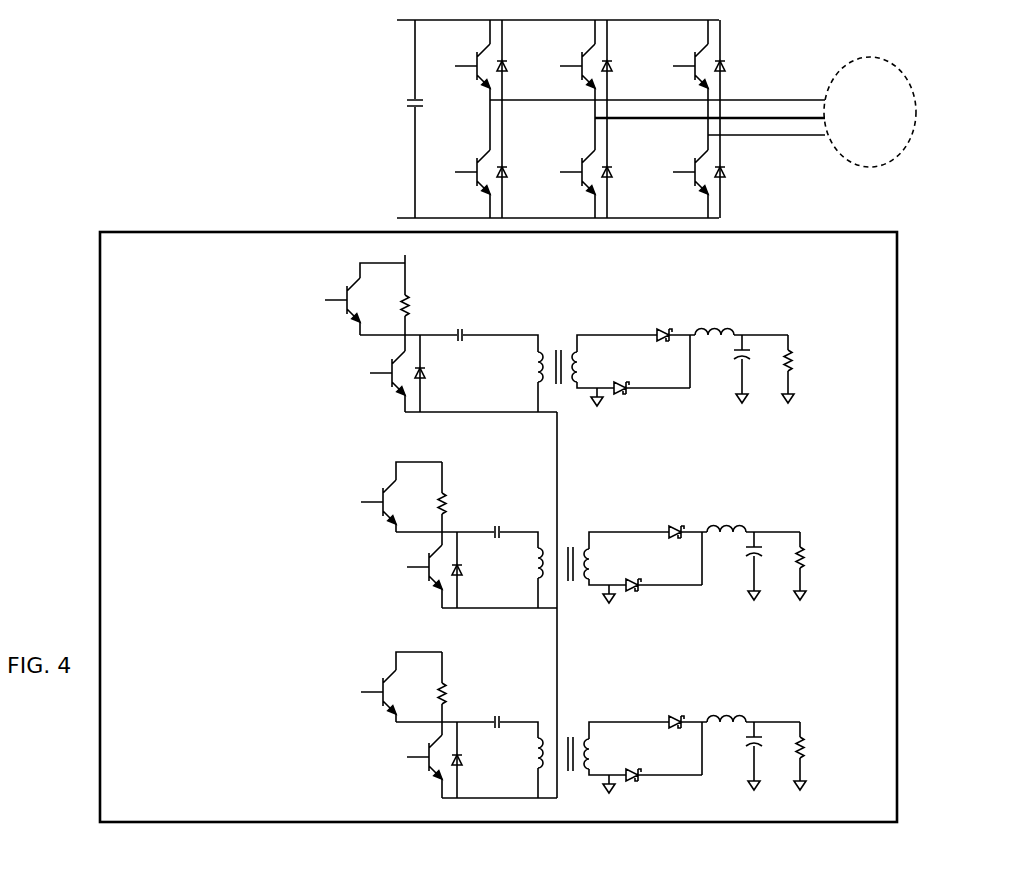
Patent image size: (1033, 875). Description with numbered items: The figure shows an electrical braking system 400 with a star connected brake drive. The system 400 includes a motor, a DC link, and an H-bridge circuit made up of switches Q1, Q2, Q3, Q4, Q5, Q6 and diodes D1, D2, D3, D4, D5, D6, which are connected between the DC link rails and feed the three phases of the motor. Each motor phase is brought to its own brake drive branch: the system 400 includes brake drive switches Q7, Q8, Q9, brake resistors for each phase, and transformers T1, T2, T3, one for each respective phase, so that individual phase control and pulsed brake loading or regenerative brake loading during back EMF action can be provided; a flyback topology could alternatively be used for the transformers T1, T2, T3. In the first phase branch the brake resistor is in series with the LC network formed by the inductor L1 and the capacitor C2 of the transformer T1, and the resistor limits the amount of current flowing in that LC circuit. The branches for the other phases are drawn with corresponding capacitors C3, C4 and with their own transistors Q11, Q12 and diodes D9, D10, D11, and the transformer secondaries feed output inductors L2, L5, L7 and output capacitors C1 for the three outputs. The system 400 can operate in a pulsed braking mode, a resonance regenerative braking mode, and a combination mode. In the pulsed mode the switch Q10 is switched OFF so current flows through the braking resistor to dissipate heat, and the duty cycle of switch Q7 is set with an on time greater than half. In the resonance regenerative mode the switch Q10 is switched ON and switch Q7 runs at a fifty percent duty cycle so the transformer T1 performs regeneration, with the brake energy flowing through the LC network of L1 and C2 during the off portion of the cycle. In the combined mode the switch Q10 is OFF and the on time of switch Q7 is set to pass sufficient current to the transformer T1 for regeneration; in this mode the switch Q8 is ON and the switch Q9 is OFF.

The electrical braking system 400 is at (79, 78).
The switch Q1 is at (471, 61).
The switch Q2 is at (471, 167).
The switch Q3 is at (576, 61).
The switch Q4 is at (576, 167).
The switch Q5 is at (689, 61).
The switch Q6 is at (689, 167).
The diode D1 is at (517, 65).
The diode D2 is at (622, 65).
The diode D3 is at (735, 65).
The diode D4 is at (517, 171).
The diode D5 is at (622, 171).
The diode D6 is at (735, 171).
The brake drive switch Q7 is at (385, 371).
The brake drive switch Q8 is at (417, 567).
The brake drive switch Q9 is at (417, 757).
The switch Q10 is at (336, 296).
The brake control transistor phase B Q11 is at (373, 497).
The brake control transistor phase C Q12 is at (373, 687).
The brake diode phase B D9 is at (474, 577).
The brake diode phase A D10 is at (441, 378).
The brake diode phase C D11 is at (477, 767).
The capacitor C2 is at (467, 348).
The resonant capacitor phase B C3 is at (499, 522).
The resonant capacitor phase C C4 is at (499, 712).
The inductor L1 is at (528, 560).
The transformer T1 is at (562, 355).
The transformer T2 is at (575, 551).
The transformer T3 is at (575, 740).
The output filter inductor OUT1 L2 is at (714, 321).
The output filter inductor OUT2 L5 is at (726, 519).
The output filter inductor OUT3 L7 is at (726, 701).
The output filter capacitor C1 is at (759, 555).